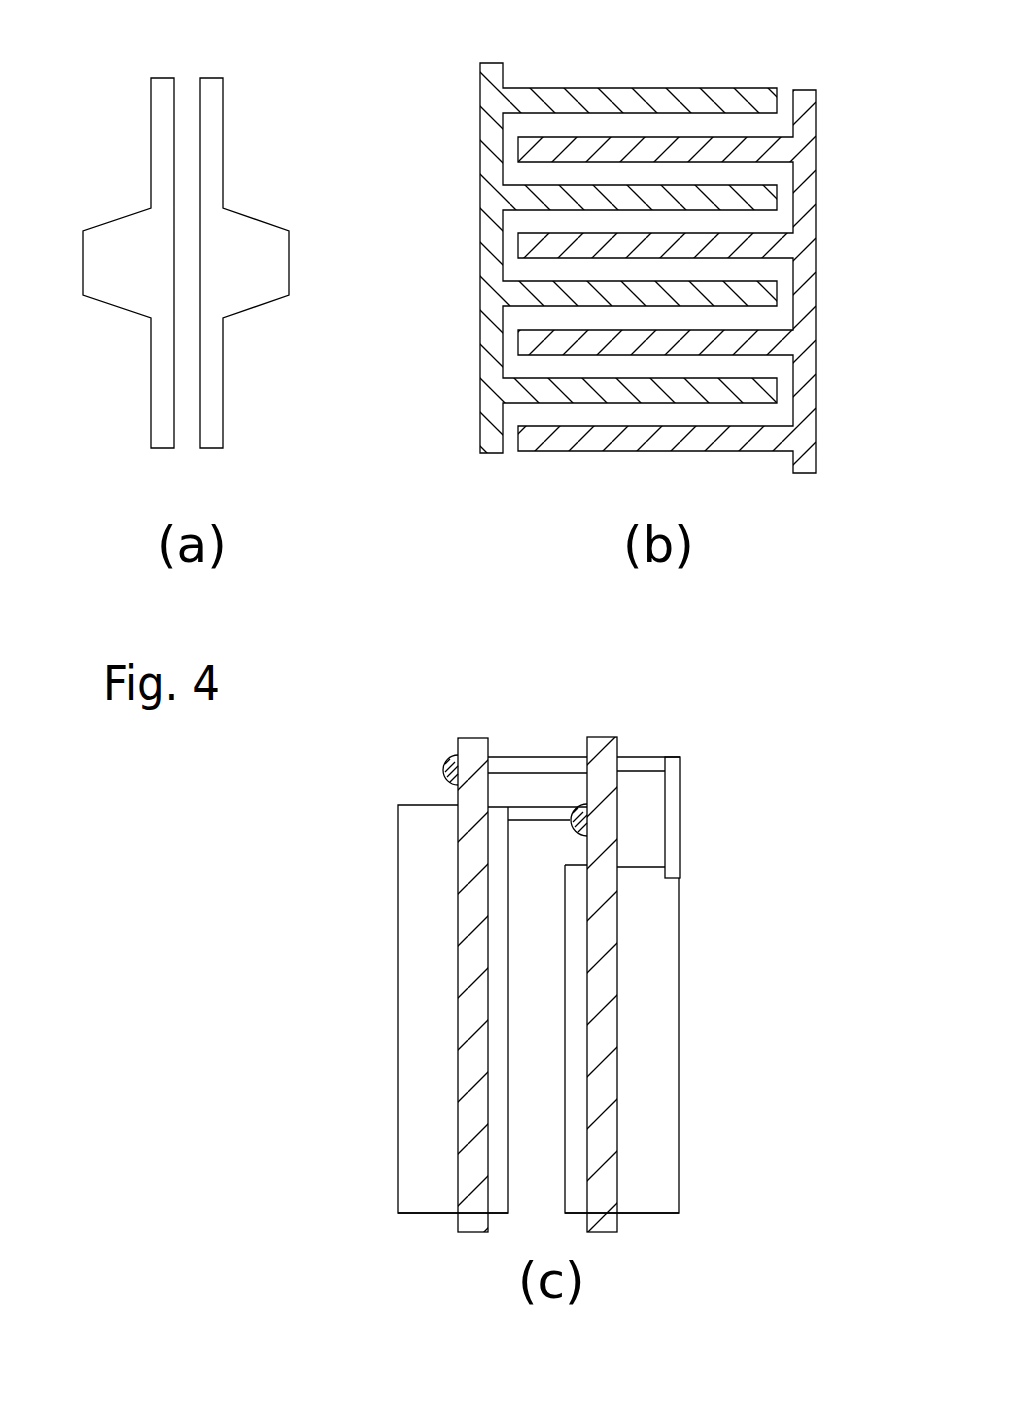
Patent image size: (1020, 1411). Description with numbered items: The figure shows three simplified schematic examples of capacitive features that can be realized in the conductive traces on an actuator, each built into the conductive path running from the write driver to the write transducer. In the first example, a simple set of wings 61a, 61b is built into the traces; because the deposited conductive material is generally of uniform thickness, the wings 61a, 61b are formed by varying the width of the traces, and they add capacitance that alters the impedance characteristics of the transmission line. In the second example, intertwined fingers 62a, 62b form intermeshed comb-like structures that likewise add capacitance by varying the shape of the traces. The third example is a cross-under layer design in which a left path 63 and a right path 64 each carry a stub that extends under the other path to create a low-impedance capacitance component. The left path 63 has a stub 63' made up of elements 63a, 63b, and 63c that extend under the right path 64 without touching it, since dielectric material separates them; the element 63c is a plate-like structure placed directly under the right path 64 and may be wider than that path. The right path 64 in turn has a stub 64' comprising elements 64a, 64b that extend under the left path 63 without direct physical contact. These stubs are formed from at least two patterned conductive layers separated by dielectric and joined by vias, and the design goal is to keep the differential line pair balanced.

The wing 61a is at (160, 85).
The wing 61b is at (212, 88).
The finger 62a is at (633, 78).
The finger 62b is at (803, 97).
The left path 63 is at (444, 954).
The stub element 63a is at (540, 762).
The stub element 63b is at (672, 762).
The plate-like structure 63c is at (648, 1205).
The stub 63' is at (660, 1039).
The right path 64 is at (616, 958).
The stub element 64a is at (537, 815).
The stub element 64b is at (433, 1205).
The stub 64' is at (412, 1009).